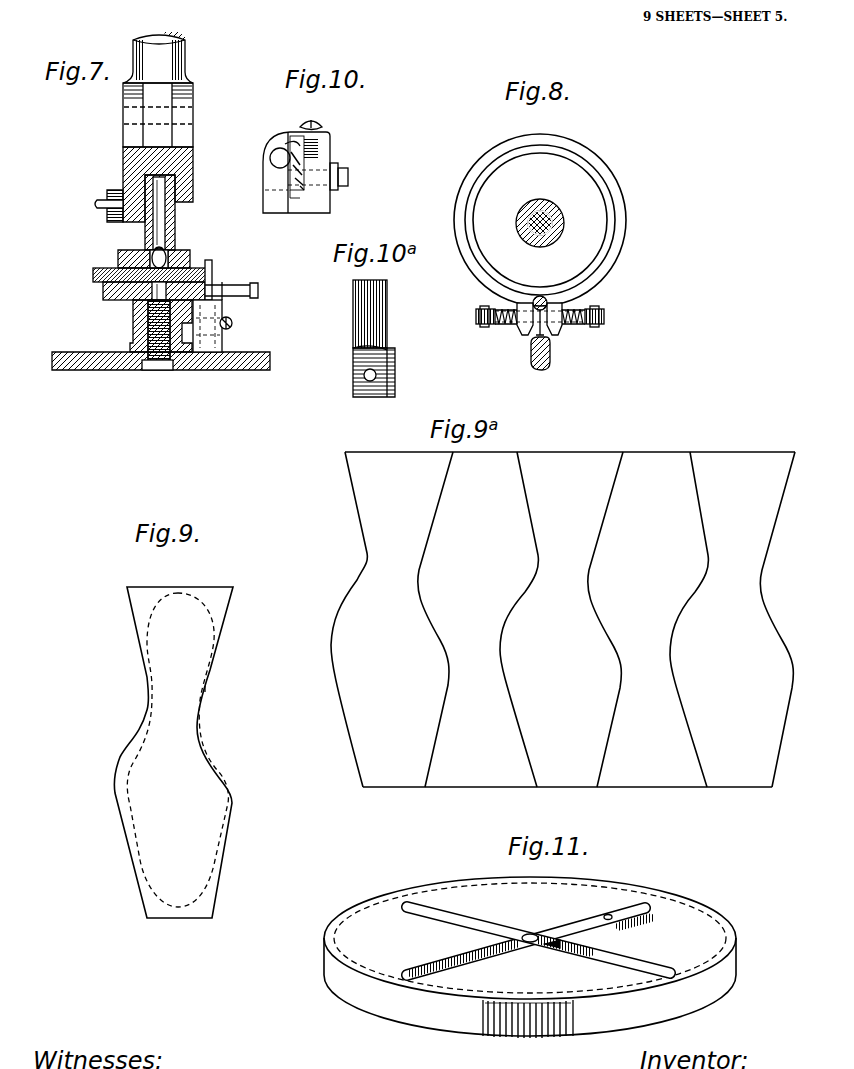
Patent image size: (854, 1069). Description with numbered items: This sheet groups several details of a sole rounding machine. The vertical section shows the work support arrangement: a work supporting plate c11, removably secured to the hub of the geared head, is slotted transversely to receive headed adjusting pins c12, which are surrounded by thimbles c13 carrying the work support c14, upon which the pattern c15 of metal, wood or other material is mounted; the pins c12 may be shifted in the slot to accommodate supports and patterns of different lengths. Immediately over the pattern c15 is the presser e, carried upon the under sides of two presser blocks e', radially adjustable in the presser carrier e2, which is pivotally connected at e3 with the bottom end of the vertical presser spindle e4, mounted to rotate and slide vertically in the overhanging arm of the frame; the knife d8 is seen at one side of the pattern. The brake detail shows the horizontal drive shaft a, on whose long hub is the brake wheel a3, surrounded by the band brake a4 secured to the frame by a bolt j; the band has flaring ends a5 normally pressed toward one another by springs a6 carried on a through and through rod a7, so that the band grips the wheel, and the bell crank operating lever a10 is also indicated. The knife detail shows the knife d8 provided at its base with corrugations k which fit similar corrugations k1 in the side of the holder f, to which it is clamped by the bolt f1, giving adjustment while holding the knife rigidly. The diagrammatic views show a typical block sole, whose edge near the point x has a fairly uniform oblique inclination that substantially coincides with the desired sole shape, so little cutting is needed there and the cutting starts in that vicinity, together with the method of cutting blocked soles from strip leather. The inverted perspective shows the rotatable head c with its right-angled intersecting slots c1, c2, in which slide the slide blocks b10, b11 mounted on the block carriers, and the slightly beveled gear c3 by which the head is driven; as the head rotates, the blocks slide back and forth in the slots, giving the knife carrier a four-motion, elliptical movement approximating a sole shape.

In FIG. 7, the vertical presser spindle e4 is at (190, 60).
In FIG. 7, the pivot connection e3 is at (180, 103).
In FIG. 7, the presser carrier e2 is at (186, 172).
In FIG. 7, the presser blocks e' is at (179, 221).
In FIG. 7, the presser e is at (173, 250).
In FIG. 7, the pattern c15 is at (93, 272).
In FIG. 7, the work support c14 is at (103, 294).
In FIG. 7, the thimbles c13 is at (133, 325).
In FIG. 7, the adjusting pins c12 is at (158, 363).
In FIG. 7, the work supporting plate c11 is at (217, 372).
In FIG. 7, the knife d8 is at (211, 272).
In FIG. 10A, the knife d8 is at (372, 325).
In FIG. 9, the knife d8 is at (206, 692).
In FIG. 10, the holder f is at (320, 152).
In FIG. 10, the bolt f1 is at (348, 176).
In FIG. 10, the corrugations k1 is at (300, 188).
In FIG. 10A, the corrugations k is at (360, 377).
In FIG. 8, the band brake a4 is at (580, 150).
In FIG. 8, the brake wheel a3 is at (600, 205).
In FIG. 8, the horizontal drive shaft a is at (552, 213).
In FIG. 8, the bolt j is at (543, 297).
In FIG. 8, the through and through rod a7 is at (604, 317).
In FIG. 8, the springs a6 is at (500, 326).
In FIG. 8, the flaring ends a5 is at (522, 330).
In FIG. 8, the bell crank operating lever a10 is at (540, 370).
In FIG. 9, the point x is at (212, 665).
In FIG. 11, the rotatable head c is at (530, 956).
In FIG. 11, the slot c1 is at (432, 962).
In FIG. 11, the slot c2 is at (645, 965).
In FIG. 11, the slide block b10 is at (540, 944).
In FIG. 11, the slide block b11 is at (620, 920).
In FIG. 11, the gear c3 is at (525, 1038).